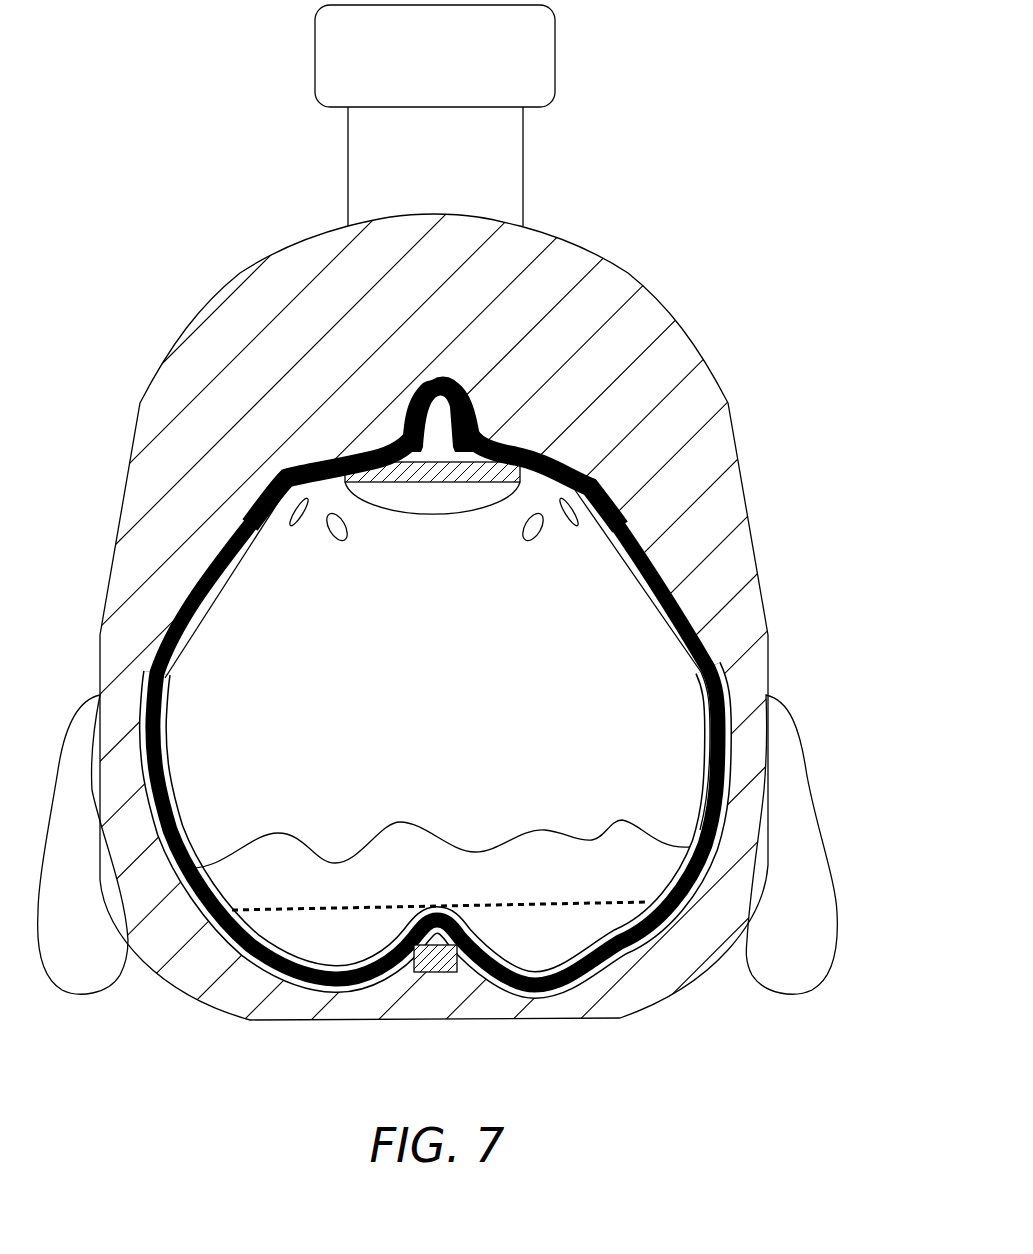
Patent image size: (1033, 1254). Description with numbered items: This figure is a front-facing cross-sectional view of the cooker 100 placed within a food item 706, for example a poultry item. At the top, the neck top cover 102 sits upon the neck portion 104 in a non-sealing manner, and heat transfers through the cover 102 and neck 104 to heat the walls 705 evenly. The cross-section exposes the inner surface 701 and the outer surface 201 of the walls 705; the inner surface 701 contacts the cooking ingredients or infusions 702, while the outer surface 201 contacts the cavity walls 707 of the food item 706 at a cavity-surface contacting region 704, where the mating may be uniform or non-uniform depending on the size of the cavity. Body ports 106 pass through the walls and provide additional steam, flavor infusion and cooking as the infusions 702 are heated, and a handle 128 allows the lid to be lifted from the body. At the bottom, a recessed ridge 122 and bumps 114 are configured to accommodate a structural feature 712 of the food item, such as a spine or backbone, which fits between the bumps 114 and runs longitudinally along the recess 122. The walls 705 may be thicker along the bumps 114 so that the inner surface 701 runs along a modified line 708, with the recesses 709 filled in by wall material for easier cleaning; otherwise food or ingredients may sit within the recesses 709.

The cooker 100 is at (609, 560).
The neck top cover 102 is at (555, 58).
The neck portion 104 is at (563, 149).
The body ports 106 is at (292, 532).
The bumps 114 is at (335, 915).
The recessed ridge 122 is at (438, 906).
The handle 128 is at (438, 432).
The outer surface 201 is at (710, 740).
The inner surface 701 is at (677, 637).
The cooking infusions 702 is at (396, 884).
The cavity-surface contacting region 704 is at (516, 552).
The walls 705 is at (700, 705).
The food item 706 is at (800, 993).
The cavity walls 707 is at (433, 703).
The modified line 708 is at (292, 908).
The recesses 709 is at (338, 962).
The structural feature 712 is at (428, 975).